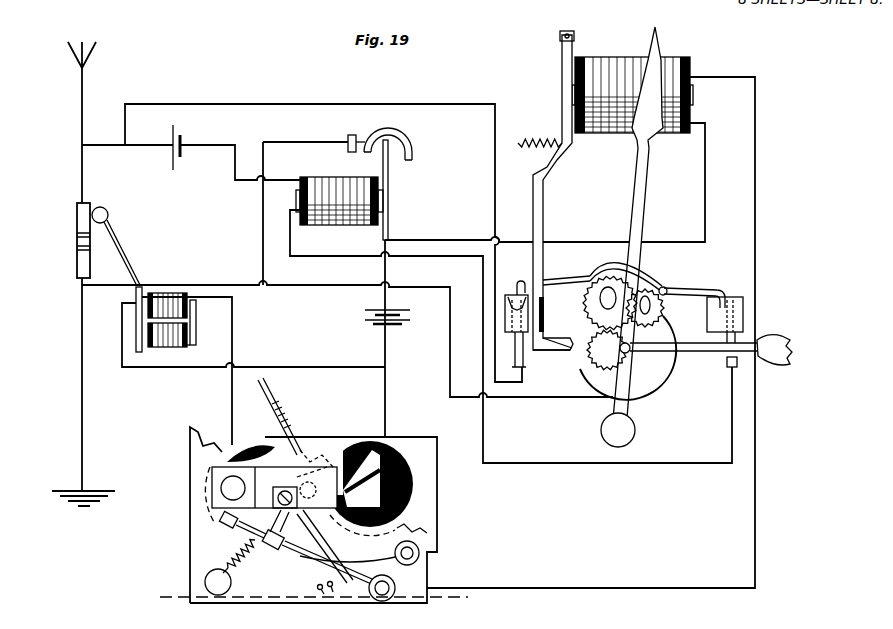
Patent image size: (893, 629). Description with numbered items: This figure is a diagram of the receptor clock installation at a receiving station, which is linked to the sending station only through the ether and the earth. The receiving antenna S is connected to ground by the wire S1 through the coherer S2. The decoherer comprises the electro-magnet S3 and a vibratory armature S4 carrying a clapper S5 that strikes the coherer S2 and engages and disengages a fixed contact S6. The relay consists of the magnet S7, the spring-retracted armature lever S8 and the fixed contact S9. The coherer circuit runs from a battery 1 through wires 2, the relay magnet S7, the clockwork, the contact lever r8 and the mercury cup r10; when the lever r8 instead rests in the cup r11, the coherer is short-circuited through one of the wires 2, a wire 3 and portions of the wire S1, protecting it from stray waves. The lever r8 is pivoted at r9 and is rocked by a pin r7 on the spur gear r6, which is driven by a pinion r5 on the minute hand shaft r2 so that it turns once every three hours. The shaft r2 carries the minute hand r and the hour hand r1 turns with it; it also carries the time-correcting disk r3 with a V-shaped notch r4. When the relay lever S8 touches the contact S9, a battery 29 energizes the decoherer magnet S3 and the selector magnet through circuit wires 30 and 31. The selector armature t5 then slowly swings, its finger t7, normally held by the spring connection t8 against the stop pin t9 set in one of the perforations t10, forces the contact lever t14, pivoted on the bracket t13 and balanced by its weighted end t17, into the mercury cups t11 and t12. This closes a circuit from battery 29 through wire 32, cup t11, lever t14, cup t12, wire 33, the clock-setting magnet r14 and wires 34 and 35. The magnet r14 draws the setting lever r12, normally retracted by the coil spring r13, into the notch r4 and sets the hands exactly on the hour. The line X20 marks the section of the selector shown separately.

The receiving antenna S is at (88, 55).
The ground wire S1 is at (80, 129).
The coherer S2 is at (76, 240).
The decoherer electro-magnet S3 is at (171, 299).
The vibratory armature S4 is at (135, 341).
The clapper S5 is at (127, 252).
The fixed contact S6 is at (130, 305).
The relay magnet S7 is at (325, 178).
The spring-retracted armature lever S8 is at (390, 229).
The fixed relay contact S9 is at (386, 127).
The battery 1 is at (181, 130).
The wires 2 is at (147, 146).
The wire 3 is at (257, 104).
The battery 29 is at (397, 323).
The circuit wire 30 is at (372, 354).
The circuit wire 31 is at (262, 232).
The wire 32 is at (438, 514).
The wire 33 is at (638, 589).
The wire 34 is at (705, 186).
The wire 35 is at (389, 272).
The minute hand r is at (639, 185).
The hour hand r1 is at (776, 362).
The minute hand shaft r2 is at (660, 370).
The time-correcting disk r3 is at (660, 378).
The V-shaped notch r4 is at (578, 352).
The spur pinion r5 is at (594, 320).
The spur gear r6 is at (609, 279).
The pin r7 is at (657, 307).
The contact lever r8 is at (559, 281).
The pivot r9 is at (667, 288).
The mercury-containing cup r10 is at (737, 318).
The mercury-containing cup r11 is at (509, 294).
The clock-setting lever r12 is at (545, 183).
The coil spring r13 is at (531, 140).
The clock-setting magnet r14 is at (609, 68).
The armature t5 is at (360, 462).
The finger t7 is at (318, 534).
The spring connection t8 is at (236, 550).
The stop pin t9 is at (352, 584).
The perforations t10 is at (330, 592).
The mercury cup contact t11 is at (420, 556).
The mercury cup contact t12 is at (396, 588).
The bearing bracket t13 is at (214, 480).
The contact lever t14 is at (316, 563).
The weighted end t17 is at (221, 525).
The section line X20 is at (319, 596).